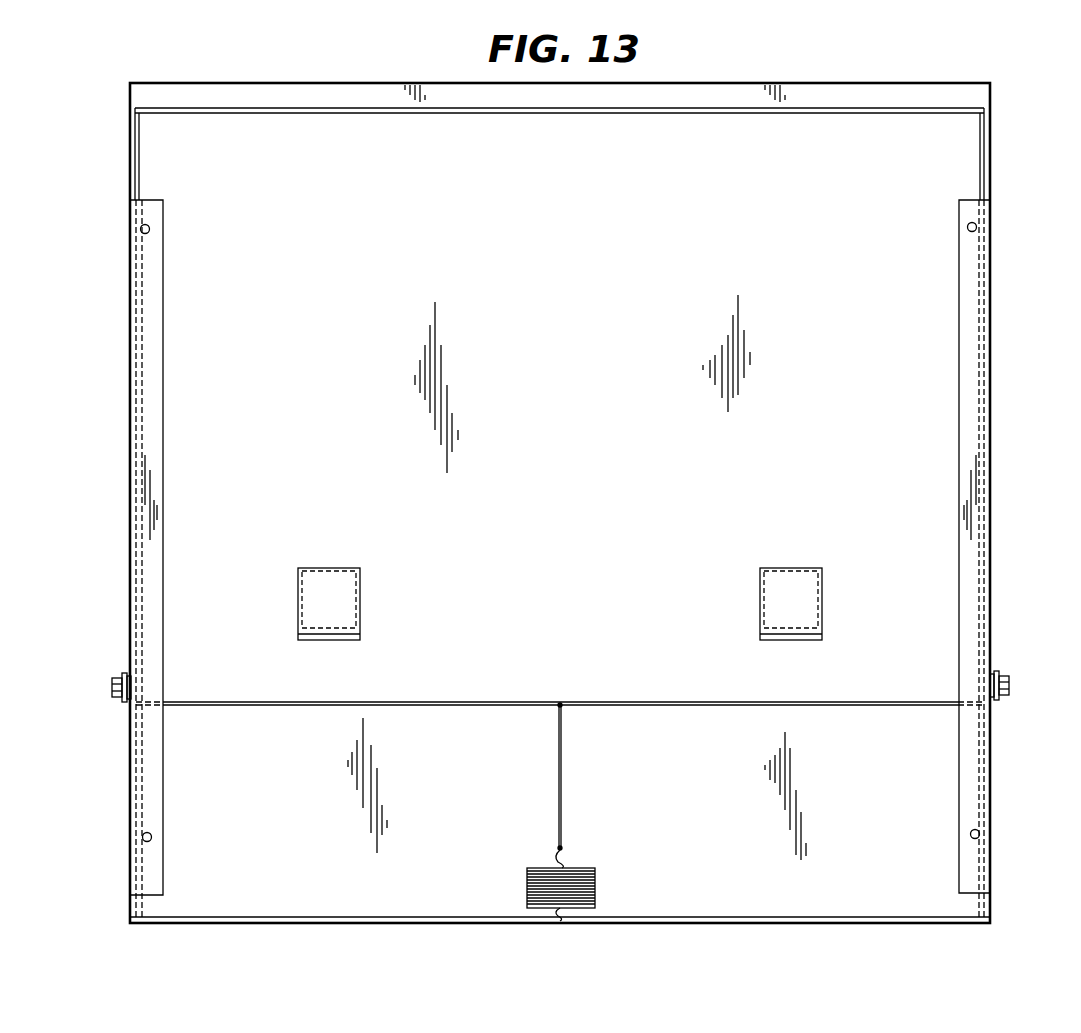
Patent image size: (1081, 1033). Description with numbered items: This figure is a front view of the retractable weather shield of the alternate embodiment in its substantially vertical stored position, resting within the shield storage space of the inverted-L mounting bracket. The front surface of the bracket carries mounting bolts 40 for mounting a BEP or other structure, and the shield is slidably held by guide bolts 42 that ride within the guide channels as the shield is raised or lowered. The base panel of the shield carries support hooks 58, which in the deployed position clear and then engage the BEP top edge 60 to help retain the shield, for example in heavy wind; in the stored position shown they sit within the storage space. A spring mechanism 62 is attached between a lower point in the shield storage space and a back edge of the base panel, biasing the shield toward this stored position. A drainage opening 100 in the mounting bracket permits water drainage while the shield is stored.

The drainage opening 100 is at (147, 907).
The BEP top edge 60 is at (153, 200).
The mounting bolts 40 is at (150, 229).
The guide bolts 42 is at (112, 688).
The support hook 58 is at (329, 577).
The spring mechanism 62 is at (530, 890).